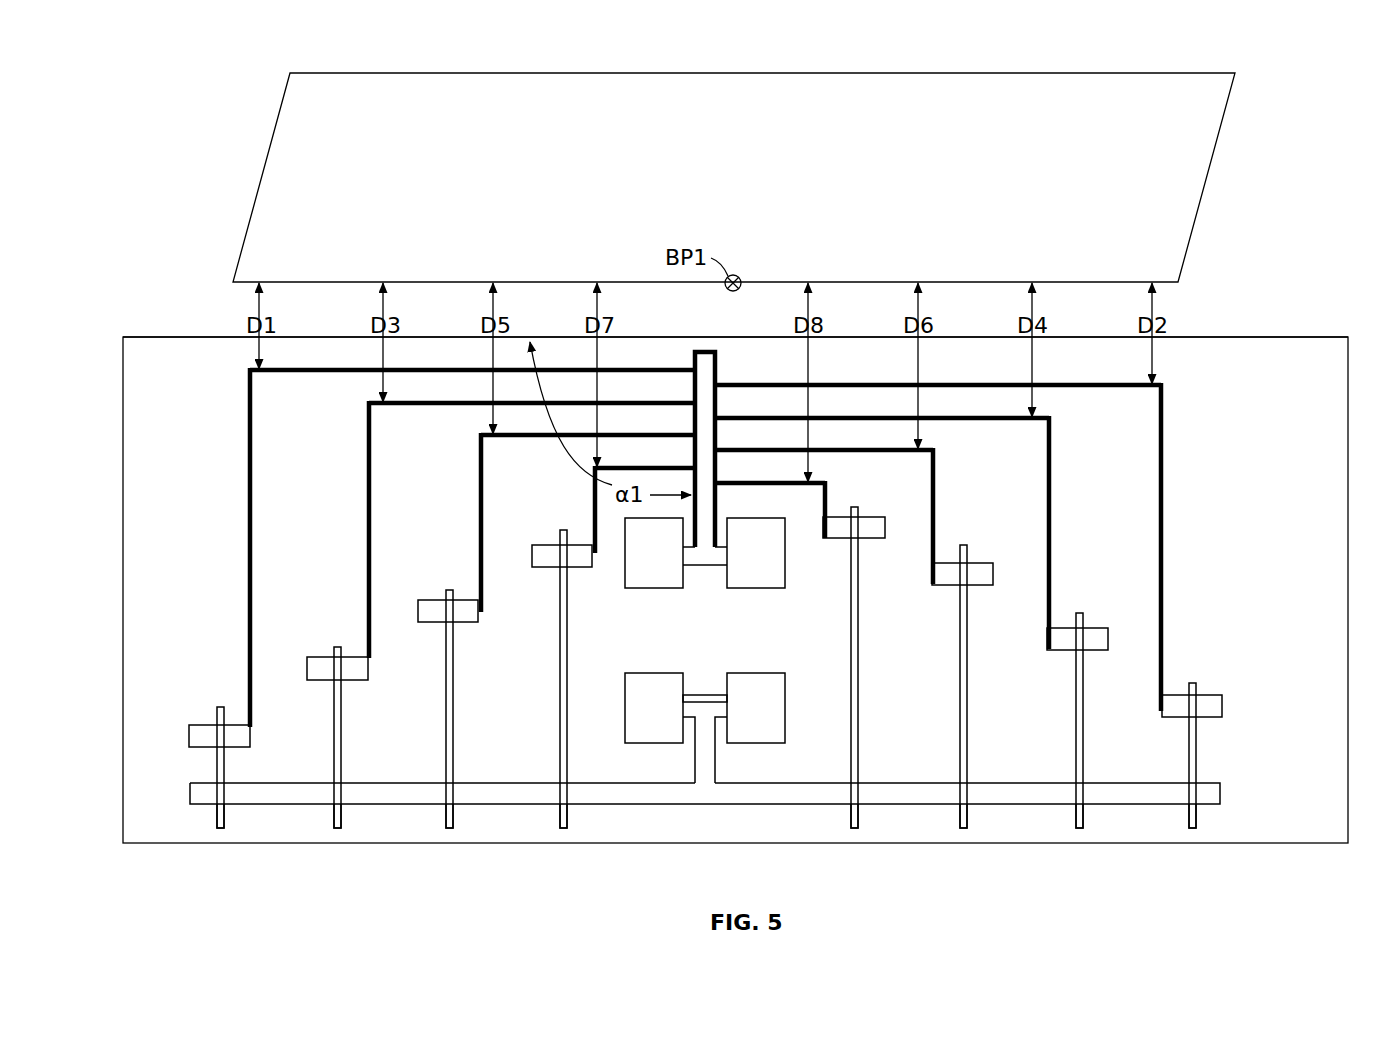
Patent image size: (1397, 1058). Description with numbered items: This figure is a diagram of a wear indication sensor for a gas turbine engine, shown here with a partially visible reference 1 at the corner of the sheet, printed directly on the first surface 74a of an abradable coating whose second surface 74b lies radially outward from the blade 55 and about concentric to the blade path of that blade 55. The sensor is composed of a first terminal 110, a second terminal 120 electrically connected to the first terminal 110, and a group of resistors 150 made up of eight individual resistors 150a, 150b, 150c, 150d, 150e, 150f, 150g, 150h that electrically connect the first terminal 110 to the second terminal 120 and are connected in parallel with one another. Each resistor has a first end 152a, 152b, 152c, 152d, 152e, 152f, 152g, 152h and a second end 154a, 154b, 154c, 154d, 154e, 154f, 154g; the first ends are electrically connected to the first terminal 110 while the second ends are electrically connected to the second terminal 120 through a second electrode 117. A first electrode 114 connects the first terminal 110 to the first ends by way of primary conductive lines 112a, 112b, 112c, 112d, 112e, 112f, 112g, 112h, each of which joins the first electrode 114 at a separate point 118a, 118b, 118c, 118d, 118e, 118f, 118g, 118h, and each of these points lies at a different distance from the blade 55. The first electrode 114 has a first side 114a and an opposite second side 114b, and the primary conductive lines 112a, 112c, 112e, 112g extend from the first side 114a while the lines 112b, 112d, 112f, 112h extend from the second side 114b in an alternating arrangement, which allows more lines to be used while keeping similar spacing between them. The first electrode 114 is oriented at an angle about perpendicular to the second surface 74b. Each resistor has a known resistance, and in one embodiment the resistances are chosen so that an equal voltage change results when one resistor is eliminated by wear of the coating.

The vehicle 1 is at (1352, 78).
The blade 55 is at (748, 191).
The first surface 74a is at (147, 415).
The second surface 74b is at (173, 335).
The first terminal 110 is at (642, 590).
The first electrode 114 is at (707, 558).
The first side 114a is at (680, 526).
The second side 114b is at (730, 526).
The second electrode 117 is at (724, 795).
The separate point 118a is at (693, 367).
The separate point 118b is at (718, 383).
The separate point 118c is at (693, 402).
The separate point 118d is at (720, 417).
The separate point 118e is at (693, 434).
The separate point 118f is at (720, 449).
The separate point 118g is at (693, 467).
The separate point 118h is at (720, 482).
The primary conductive line 112a is at (248, 525).
The primary conductive line 112b is at (1163, 525).
The primary conductive line 112c is at (367, 497).
The primary conductive line 112d is at (1052, 505).
The primary conductive line 112e is at (479, 497).
The primary conductive line 112f is at (935, 500).
The primary conductive line 112g is at (590, 483).
The primary conductive line 112h is at (806, 483).
The second terminal 120 is at (642, 673).
The receive bus 150 is at (145, 730).
The resistor 150a is at (218, 781).
The resistor 150b is at (1197, 778).
The resistor 150c is at (335, 781).
The resistor 150d is at (1085, 778).
The resistor 150e is at (448, 778).
The resistor 150f is at (968, 778).
The resistor 150g is at (562, 778).
The resistor 150h is at (860, 778).
The first end 152a is at (215, 722).
The first end 152b is at (1197, 698).
The first end 152c is at (333, 657).
The first end 152d is at (1083, 633).
The first end 152e is at (445, 600).
The first end 152f is at (966, 570).
The first end 152g is at (558, 545).
The first end 152h is at (858, 525).
The second end 154a is at (225, 805).
The second end 154b is at (1185, 805).
The second end 154c is at (343, 805).
The second end 154d is at (1085, 805).
The second end 154e is at (455, 805).
The second end 154f is at (965, 805).
The second end 154g is at (570, 805).